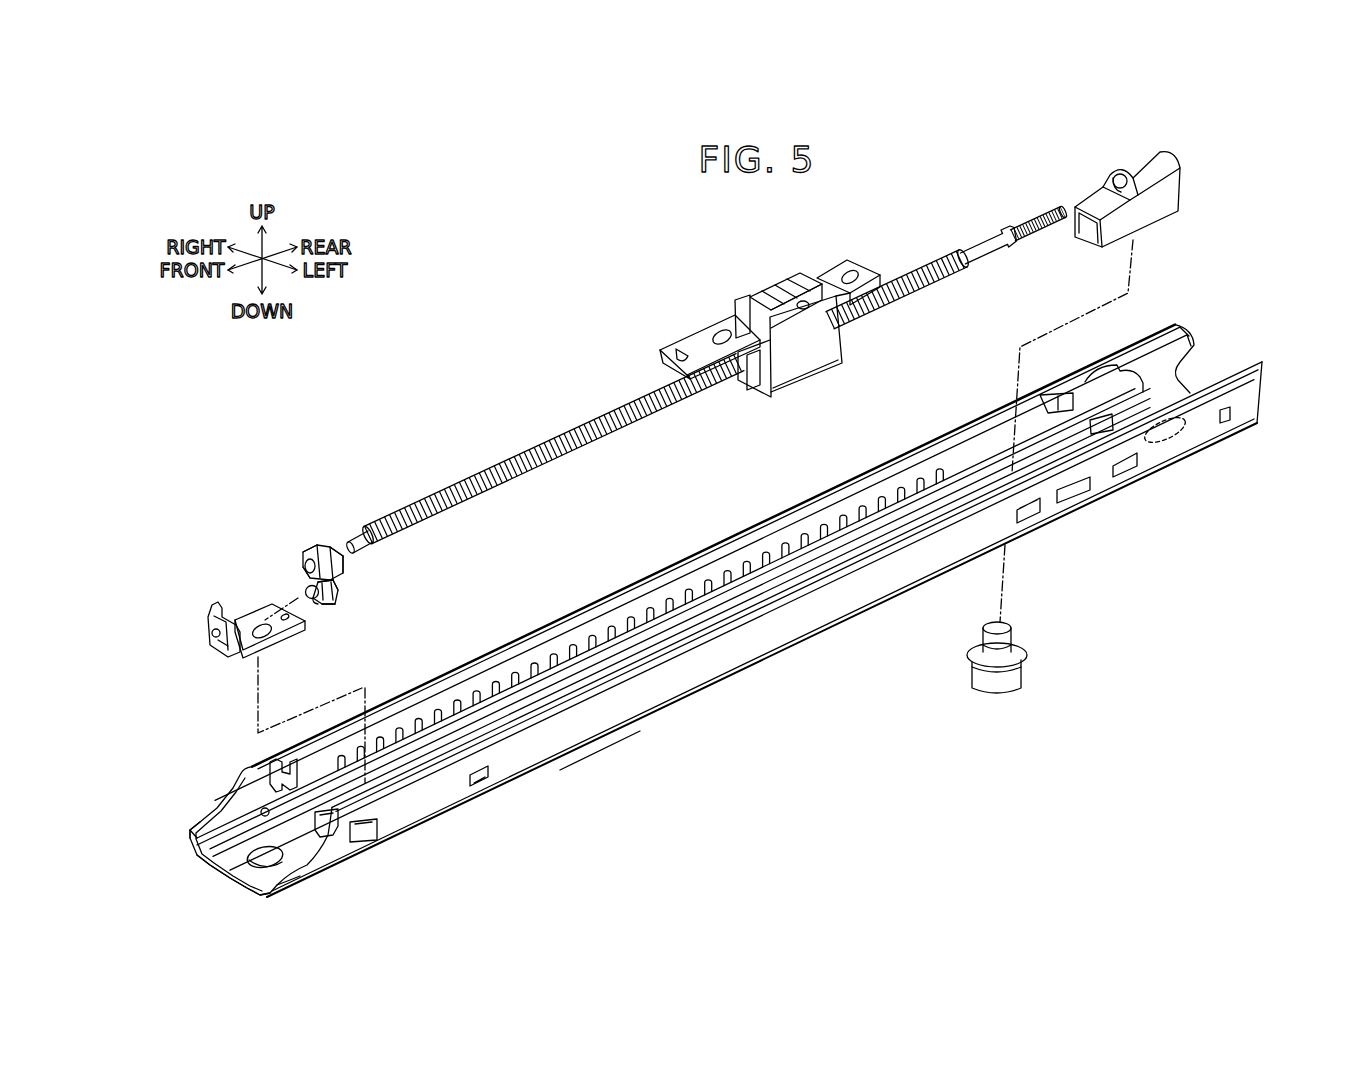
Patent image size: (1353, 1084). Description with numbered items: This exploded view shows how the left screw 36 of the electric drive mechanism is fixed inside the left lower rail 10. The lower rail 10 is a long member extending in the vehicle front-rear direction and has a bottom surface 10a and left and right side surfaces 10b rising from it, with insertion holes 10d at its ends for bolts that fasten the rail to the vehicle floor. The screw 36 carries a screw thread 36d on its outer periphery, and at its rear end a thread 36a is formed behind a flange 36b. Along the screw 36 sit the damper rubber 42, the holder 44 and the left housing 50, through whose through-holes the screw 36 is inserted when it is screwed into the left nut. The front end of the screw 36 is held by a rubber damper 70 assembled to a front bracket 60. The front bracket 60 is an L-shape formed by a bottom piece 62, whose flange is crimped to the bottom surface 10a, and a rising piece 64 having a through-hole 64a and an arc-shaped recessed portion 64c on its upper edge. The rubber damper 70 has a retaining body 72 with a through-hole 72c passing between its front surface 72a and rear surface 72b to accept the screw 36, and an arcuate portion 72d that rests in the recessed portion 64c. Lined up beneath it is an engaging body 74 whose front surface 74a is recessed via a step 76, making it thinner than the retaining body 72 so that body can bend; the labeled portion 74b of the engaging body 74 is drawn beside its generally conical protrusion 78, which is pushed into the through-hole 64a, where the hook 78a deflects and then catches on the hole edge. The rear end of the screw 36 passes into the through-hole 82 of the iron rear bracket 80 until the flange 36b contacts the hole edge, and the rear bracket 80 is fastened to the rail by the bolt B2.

The lower rail 10 is at (719, 694).
The bottom surface 10a is at (222, 861).
The side surfaces 10b is at (251, 801).
The insertion holes 10d is at (286, 864).
The screw 36 is at (510, 450).
The thread 36a is at (1050, 233).
The flange 36b is at (1007, 229).
The screw thread 36d is at (580, 432).
The damper rubber 42 is at (809, 354).
The holder 44 is at (702, 343).
The left housing 50 is at (757, 272).
The front bracket 60 is at (228, 530).
The bottom piece 62 is at (263, 612).
The rising piece 64 is at (211, 613).
The through-hole 64a is at (222, 643).
The recessed portion 64c is at (209, 630).
The rubber damper 70 is at (226, 470).
The retaining body 72 is at (298, 546).
The front surface 72a is at (300, 576).
The rear surface 72b is at (333, 550).
The through-hole 72c is at (303, 552).
The arcuate portion 72d is at (343, 567).
The engaging body 74 is at (305, 588).
The front surface 74a is at (334, 604).
The retainer portion 74b is at (334, 590).
The step 76 is at (338, 583).
The protrusion 78 is at (311, 600).
The hook 78a is at (321, 601).
The rear bracket 80 is at (1160, 211).
The through-hole 82 is at (1113, 180).
The bolt B2 is at (1010, 676).